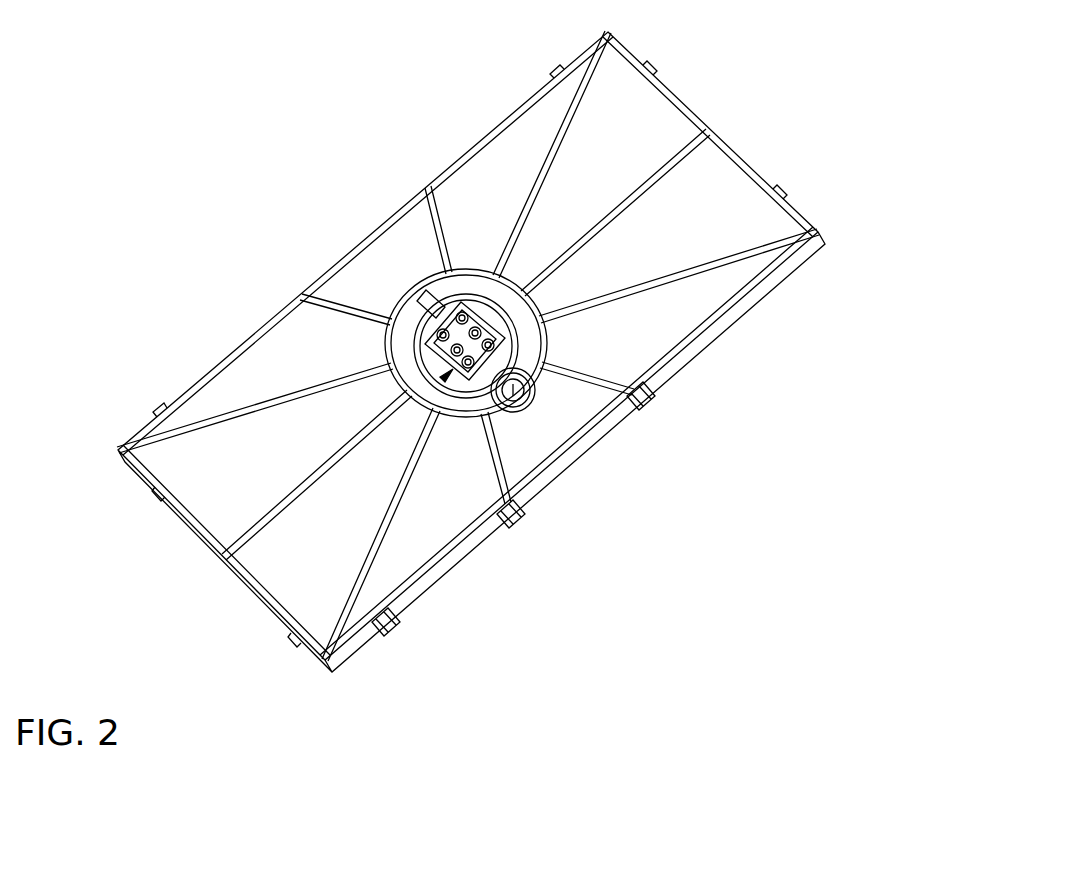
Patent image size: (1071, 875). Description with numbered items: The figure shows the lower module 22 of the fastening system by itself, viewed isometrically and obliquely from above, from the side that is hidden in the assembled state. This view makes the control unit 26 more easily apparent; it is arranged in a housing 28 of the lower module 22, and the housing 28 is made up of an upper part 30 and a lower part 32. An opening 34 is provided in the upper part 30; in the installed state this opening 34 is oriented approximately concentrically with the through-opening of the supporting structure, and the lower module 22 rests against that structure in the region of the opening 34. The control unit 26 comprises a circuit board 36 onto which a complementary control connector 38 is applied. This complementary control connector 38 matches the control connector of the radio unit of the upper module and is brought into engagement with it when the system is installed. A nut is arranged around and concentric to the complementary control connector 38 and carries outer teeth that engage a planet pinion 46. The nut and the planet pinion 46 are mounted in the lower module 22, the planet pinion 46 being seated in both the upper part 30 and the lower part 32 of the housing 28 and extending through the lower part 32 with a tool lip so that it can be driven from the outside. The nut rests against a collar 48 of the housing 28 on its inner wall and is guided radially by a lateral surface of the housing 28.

The lower module 22 is at (848, 147).
The control unit 26 is at (417, 337).
The housing 28 is at (578, 207).
The upper part 30 is at (678, 242).
The lower part 32 is at (713, 345).
The opening 34 is at (415, 370).
The circuit board 36 is at (488, 320).
The complementary control connector 38 is at (450, 327).
The planet pinion 46 is at (533, 398).
The collar 48 is at (466, 358).